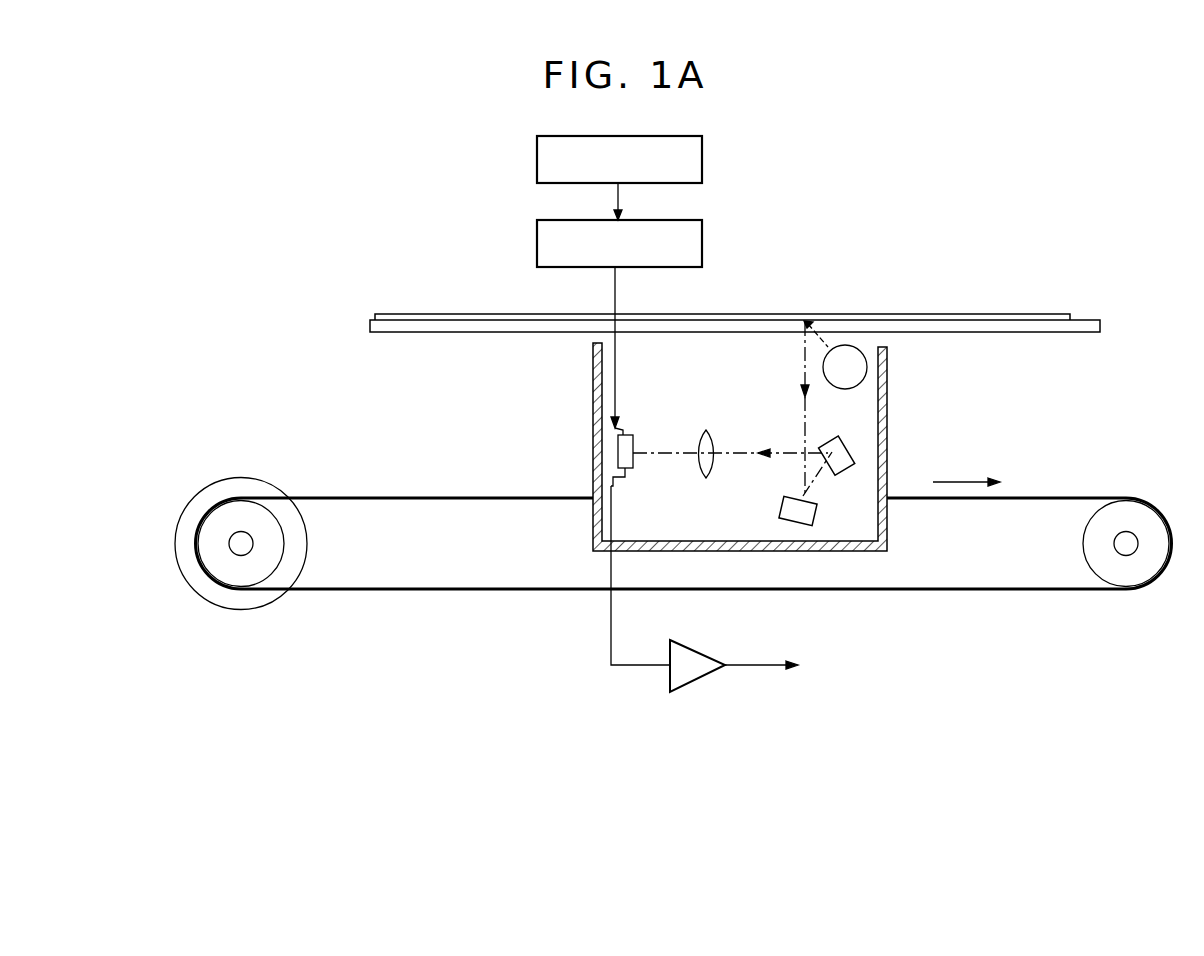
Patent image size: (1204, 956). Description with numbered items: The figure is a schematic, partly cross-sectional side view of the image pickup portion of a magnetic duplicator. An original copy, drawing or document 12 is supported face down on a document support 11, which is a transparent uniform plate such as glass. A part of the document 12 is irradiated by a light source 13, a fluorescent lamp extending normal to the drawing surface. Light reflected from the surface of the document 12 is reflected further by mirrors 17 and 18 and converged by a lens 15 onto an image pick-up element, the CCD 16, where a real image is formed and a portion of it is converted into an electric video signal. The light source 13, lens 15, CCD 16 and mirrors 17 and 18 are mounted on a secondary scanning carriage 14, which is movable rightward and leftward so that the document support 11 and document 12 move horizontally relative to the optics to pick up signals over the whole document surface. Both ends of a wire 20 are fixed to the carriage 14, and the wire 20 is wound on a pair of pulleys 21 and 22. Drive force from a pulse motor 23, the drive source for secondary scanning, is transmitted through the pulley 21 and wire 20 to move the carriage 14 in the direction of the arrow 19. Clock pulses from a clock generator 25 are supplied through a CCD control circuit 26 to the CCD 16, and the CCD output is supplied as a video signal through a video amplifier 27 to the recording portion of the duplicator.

The document support 11 is at (1097, 320).
The document 12 is at (978, 316).
The light source 13 is at (858, 370).
The secondary scanning carriage 14 is at (593, 368).
The lens 15 is at (712, 433).
The CCD 16 is at (630, 437).
The mirror 17 is at (780, 520).
The mirror 18 is at (853, 456).
The arrow 19 is at (960, 482).
The wire 20 is at (440, 591).
The pulley 21 is at (240, 583).
The pulley 22 is at (1128, 510).
The pulse motor 23 is at (268, 483).
The clock generator 25 is at (688, 156).
The CCD control circuit 26 is at (695, 224).
The video amplifier 27 is at (695, 672).